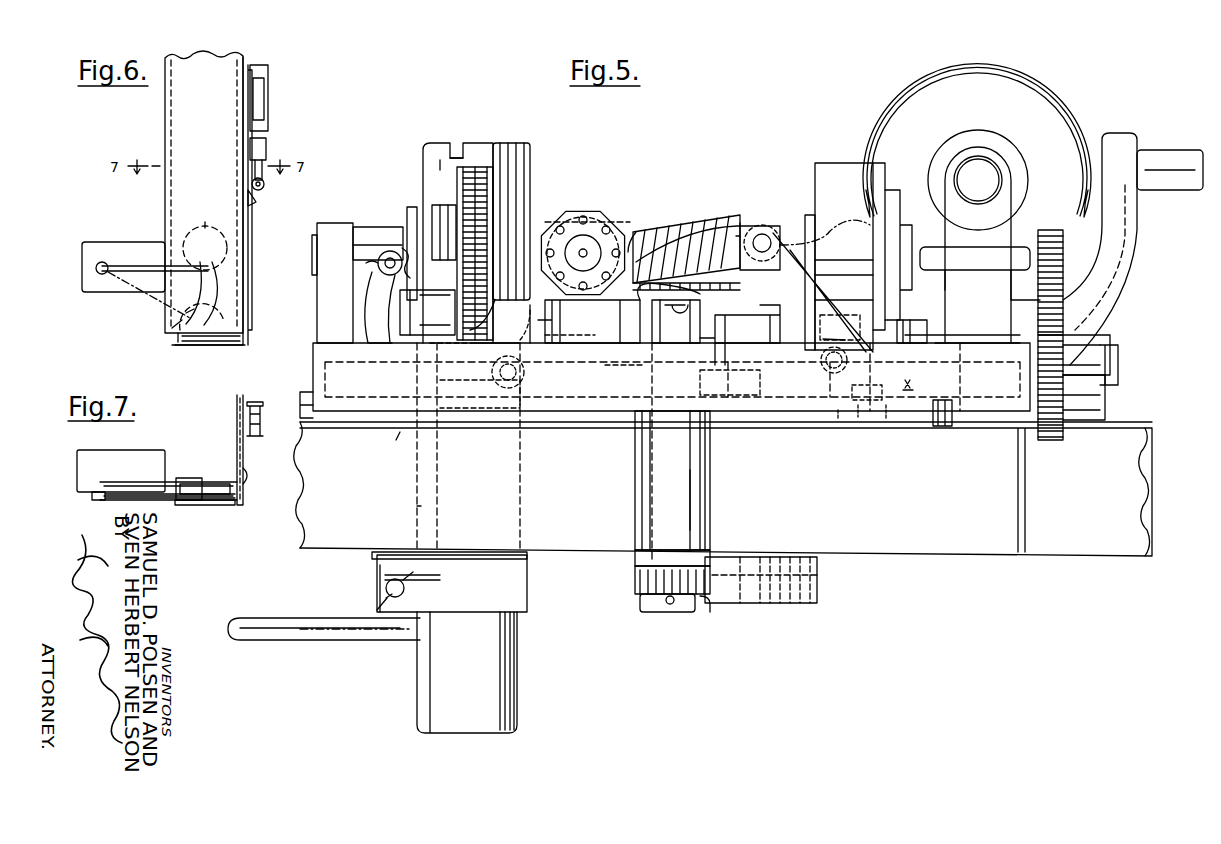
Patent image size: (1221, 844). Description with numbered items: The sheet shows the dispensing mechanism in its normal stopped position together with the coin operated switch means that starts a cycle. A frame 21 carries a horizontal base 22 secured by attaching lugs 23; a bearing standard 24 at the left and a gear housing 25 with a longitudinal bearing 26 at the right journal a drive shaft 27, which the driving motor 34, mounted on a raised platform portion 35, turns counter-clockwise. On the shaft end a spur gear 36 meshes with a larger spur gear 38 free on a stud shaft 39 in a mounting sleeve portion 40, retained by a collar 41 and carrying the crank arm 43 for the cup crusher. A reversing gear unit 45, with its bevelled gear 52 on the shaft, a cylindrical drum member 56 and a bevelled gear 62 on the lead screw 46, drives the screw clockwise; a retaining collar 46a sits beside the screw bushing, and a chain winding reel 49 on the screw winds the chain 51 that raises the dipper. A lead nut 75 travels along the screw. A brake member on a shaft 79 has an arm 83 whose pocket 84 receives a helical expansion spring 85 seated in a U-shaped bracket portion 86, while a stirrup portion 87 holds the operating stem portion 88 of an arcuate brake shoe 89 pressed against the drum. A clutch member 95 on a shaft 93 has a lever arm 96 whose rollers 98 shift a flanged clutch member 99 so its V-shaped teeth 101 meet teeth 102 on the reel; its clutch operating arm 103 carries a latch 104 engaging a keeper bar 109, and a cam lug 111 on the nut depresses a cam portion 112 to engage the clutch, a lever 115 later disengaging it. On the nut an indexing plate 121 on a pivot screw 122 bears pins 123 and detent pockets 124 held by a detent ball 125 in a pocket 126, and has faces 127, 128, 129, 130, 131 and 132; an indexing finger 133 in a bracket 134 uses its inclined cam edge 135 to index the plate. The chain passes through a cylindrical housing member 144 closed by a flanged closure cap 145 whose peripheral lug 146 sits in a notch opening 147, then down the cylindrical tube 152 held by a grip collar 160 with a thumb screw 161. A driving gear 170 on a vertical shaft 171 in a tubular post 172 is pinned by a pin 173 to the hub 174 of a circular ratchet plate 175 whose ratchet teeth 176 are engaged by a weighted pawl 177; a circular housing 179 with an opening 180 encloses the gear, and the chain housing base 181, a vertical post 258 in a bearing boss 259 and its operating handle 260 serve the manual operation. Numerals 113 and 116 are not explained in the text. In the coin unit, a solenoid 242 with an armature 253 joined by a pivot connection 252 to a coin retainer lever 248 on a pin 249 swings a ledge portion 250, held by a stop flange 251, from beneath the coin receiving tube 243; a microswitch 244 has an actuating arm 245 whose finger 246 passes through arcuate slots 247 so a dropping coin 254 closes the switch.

In FIG. 5, the supporting platform or frame 21 is at (905, 545).
In FIG. 5, the base 22 is at (782, 420).
In FIG. 5, the attaching lugs 23 is at (302, 376).
In FIG. 5, the bearing standard 24 is at (327, 218).
In FIG. 5, the gear housing 25 is at (1023, 193).
In FIG. 5, the longitudinal bearing 26 is at (1024, 230).
In FIG. 5, the drive shaft 27 is at (365, 228).
In FIG. 5, the driving motor 34 is at (890, 107).
In FIG. 5, the raised platform portion 35 is at (1112, 338).
In FIG. 5, the spur gear 36 is at (1052, 230).
In FIG. 5, the spur gear 38 is at (1050, 440).
In FIG. 5, the stud shaft 39 is at (1118, 376).
In FIG. 5, the mounting sleeve portion 40 is at (1025, 333).
In FIG. 5, the collar 41 is at (1108, 385).
In FIG. 5, the crank arm 43 is at (1132, 246).
In FIG. 5, the reversing gear unit 45 is at (837, 156).
In FIG. 5, the lead screw 46 is at (650, 229).
In FIG. 5, the retaining collar 46a is at (432, 205).
In FIG. 5, the chain winding reel 49 is at (462, 178).
In FIG. 5, the chain 51 is at (477, 168).
In FIG. 5, the bevelled gear 52 is at (889, 188).
In FIG. 5, the cylindrical drum member 56 is at (872, 164).
In FIG. 5, the bevelled gear 62 is at (808, 215).
In FIG. 5, the lead nut 75 is at (645, 204).
In FIG. 5, the shaft 79 is at (797, 405).
In FIG. 5, the arm 83 is at (856, 396).
In FIG. 5, the pocket 84 is at (928, 330).
In FIG. 5, the helical expansion spring 85 is at (906, 381).
In FIG. 5, the U-shaped bracket portion 86 is at (886, 422).
In FIG. 5, the U-shaped stirrup portion 87 is at (838, 420).
In FIG. 5, the operating stem portion 88 is at (858, 418).
In FIG. 5, the arcuate brake shoe 89 is at (911, 320).
In FIG. 5, the shaft 93 is at (480, 397).
In FIG. 5, the clutch member 95 is at (352, 331).
In FIG. 5, the lever arm 96 is at (376, 347).
In FIG. 5, the rollers 98 is at (372, 269).
In FIG. 5, the flanged clutch member 99 is at (407, 217).
In FIG. 5, the V-shaped teeth 101 is at (410, 242).
In FIG. 5, the V-shaped teeth 102 is at (435, 300).
In FIG. 5, the clutch operating arm 103 is at (558, 348).
In FIG. 5, the latch 104 is at (680, 347).
In FIG. 5, the keeper bar 109 is at (730, 382).
In FIG. 5, the cam lug 111 is at (522, 372).
In FIG. 5, the cam portion 112 is at (625, 374).
In FIG. 5, the hole 113 is at (583, 287).
In FIG. 5, the lever 115 is at (500, 333).
In FIG. 5, the bracket 116 is at (546, 220).
In FIG. 5, the indexing plate 121 is at (610, 210).
In FIG. 5, the pivot screw 122 is at (614, 242).
In FIG. 5, the pins 123 is at (583, 216).
In FIG. 5, the detent pockets 124 is at (598, 182).
In FIG. 5, the detent ball 125 is at (600, 252).
In FIG. 5, the pocket 126 is at (580, 276).
In FIG. 5, the peripheral face 127 is at (560, 225).
In FIG. 5, the peripheral face 128 is at (604, 203).
In FIG. 5, the peripheral face 129 is at (690, 215).
In FIG. 5, the peripheral face 130 is at (711, 296).
In FIG. 5, the peripheral face 131 is at (545, 332).
In FIG. 5, the peripheral face 132 is at (594, 240).
In FIG. 5, the indexing finger 133 is at (737, 222).
In FIG. 5, the bracket 134 is at (805, 260).
In FIG. 5, the inclined cam edge 135 is at (704, 232).
In FIG. 5, the cylindrical housing member 144 is at (423, 156).
In FIG. 5, the flanged closure cap 145 is at (514, 143).
In FIG. 5, the peripheral lug 146 is at (460, 158).
In FIG. 5, the notch opening 147 is at (444, 156).
In FIG. 5, the cylindrical tube 152 is at (507, 666).
In FIG. 5, the grip collar 160 is at (455, 612).
In FIG. 5, the thumb screw 161 is at (386, 589).
In FIG. 5, the driving gear 170 is at (660, 606).
In FIG. 5, the vertical shaft 171 is at (717, 505).
In FIG. 5, the tubular post 172 is at (708, 492).
In FIG. 5, the pin 173 is at (650, 347).
In FIG. 5, the hub 174 is at (725, 350).
In FIG. 5, the circular ratchet plate 175 is at (838, 339).
In FIG. 5, the ratchet teeth 176 is at (820, 320).
In FIG. 5, the weighted pawl 177 is at (584, 348).
In FIG. 5, the circular housing 179 is at (757, 598).
In FIG. 5, the opening 180 is at (708, 608).
In FIG. 5, the base of chain housing 181 is at (410, 354).
In FIG. 6, the solenoid 242 is at (262, 109).
In FIG. 6, the coin receiving tube 243 is at (177, 125).
In FIG. 7, the coin receiving tube 243 is at (212, 504).
In FIG. 6, the microswitch 244 is at (115, 245).
In FIG. 7, the microswitch 244 is at (139, 458).
In FIG. 6, the actuating arm 245 is at (140, 257).
In FIG. 7, the actuating arm 245 is at (129, 496).
In FIG. 6, the finger 246 is at (205, 248).
In FIG. 7, the finger 246 is at (195, 478).
In FIG. 6, the arcuate slots 247 is at (228, 288).
In FIG. 6, the coin retainer lever 248 is at (244, 271).
In FIG. 7, the coin retainer lever 248 is at (246, 460).
In FIG. 6, the pin 249 is at (256, 202).
In FIG. 7, the pin 249 is at (250, 477).
In FIG. 6, the ledge portion 250 is at (199, 345).
In FIG. 7, the ledge portion 250 is at (198, 506).
In FIG. 6, the stop flange 251 is at (182, 340).
In FIG. 7, the stop flange 251 is at (185, 478).
In FIG. 6, the pivot connection 252 is at (266, 185).
In FIG. 7, the pivot connection 252 is at (265, 430).
In FIG. 6, the armature 253 is at (271, 162).
In FIG. 6, the coin 254 is at (200, 215).
In FIG. 5, the vertical post 258 is at (396, 506).
In FIG. 5, the bearing boss 259 is at (391, 441).
In FIG. 5, the operating handle 260 is at (325, 632).